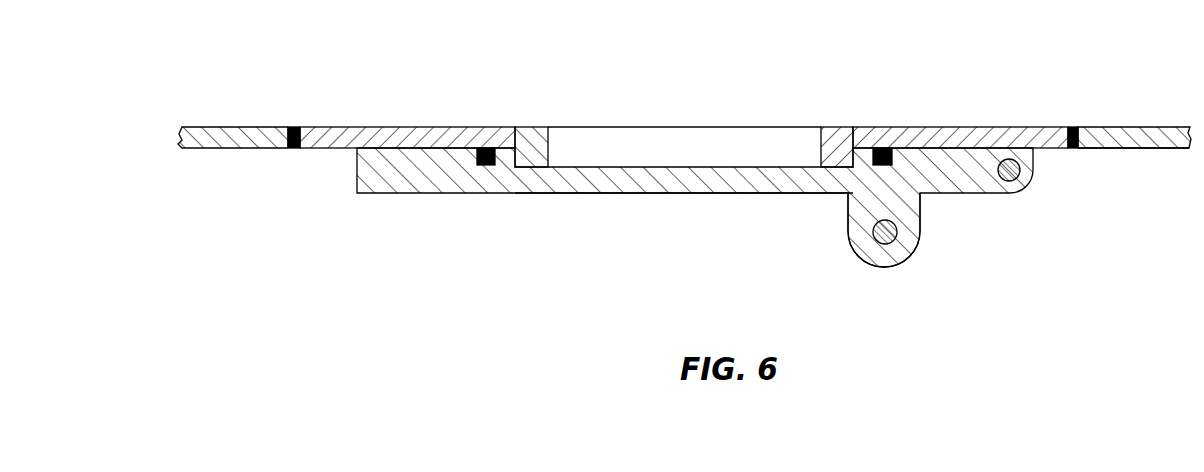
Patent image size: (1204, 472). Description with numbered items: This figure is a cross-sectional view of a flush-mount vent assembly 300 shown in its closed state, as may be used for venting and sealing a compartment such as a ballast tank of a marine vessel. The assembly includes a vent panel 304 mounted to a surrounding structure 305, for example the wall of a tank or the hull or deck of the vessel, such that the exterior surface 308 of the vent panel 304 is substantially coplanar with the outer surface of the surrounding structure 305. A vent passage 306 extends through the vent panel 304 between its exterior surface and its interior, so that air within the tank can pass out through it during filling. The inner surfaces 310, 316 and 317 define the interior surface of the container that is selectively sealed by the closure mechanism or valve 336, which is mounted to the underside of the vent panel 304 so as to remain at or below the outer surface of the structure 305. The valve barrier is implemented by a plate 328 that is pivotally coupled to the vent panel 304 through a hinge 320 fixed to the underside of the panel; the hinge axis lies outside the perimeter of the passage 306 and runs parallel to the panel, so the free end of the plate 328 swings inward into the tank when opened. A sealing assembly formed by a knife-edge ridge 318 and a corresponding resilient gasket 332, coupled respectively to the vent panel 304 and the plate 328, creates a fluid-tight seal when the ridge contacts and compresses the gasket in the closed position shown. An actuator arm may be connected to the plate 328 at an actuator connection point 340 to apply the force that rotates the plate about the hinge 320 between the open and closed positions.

The flush-mount vent assembly 300 is at (365, 52).
The vent panel 304 is at (880, 150).
The surrounding structure 305 is at (207, 127).
The vent passage 306 is at (646, 140).
The exterior surface 308 is at (835, 127).
The inner surface 310 is at (522, 168).
The inner surface 316 is at (390, 150).
The inner surface 317 is at (1143, 149).
The ridge 318 is at (476, 155).
The hinge 320 is at (1017, 178).
The plate 328 is at (648, 182).
The gasket 332 is at (872, 150).
The closure mechanism 336 is at (309, 211).
The actuator connection point 340 is at (897, 236).